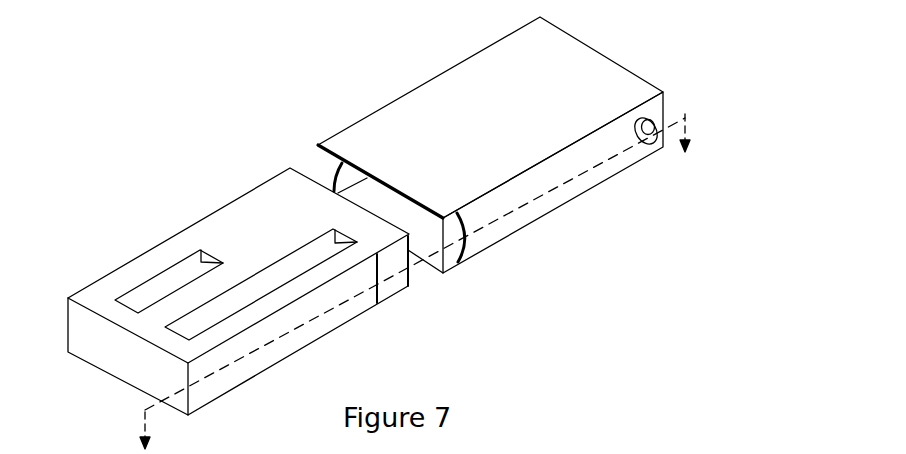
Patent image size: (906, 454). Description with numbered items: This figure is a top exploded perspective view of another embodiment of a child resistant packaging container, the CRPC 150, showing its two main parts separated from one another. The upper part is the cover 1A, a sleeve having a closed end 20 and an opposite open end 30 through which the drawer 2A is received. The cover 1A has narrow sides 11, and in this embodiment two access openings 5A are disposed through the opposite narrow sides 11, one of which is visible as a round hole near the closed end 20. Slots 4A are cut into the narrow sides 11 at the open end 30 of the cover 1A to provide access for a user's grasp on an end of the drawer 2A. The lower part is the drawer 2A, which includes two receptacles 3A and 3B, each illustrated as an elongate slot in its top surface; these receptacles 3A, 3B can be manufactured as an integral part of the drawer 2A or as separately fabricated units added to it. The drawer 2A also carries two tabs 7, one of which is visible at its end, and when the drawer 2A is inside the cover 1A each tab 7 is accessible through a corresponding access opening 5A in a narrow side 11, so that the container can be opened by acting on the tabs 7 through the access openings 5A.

The child resistant packaging container (CRPC) 150 is at (216, 163).
The cover 1A is at (512, 120).
The drawer 2A is at (268, 237).
The receptacle 3A is at (238, 292).
The receptacle 3B is at (152, 290).
The slot 4A is at (310, 159).
The access opening 5A is at (645, 122).
The tab 7 is at (388, 288).
The narrow side 11 is at (530, 210).
The closed end 20 is at (607, 57).
The open end 30 is at (393, 187).